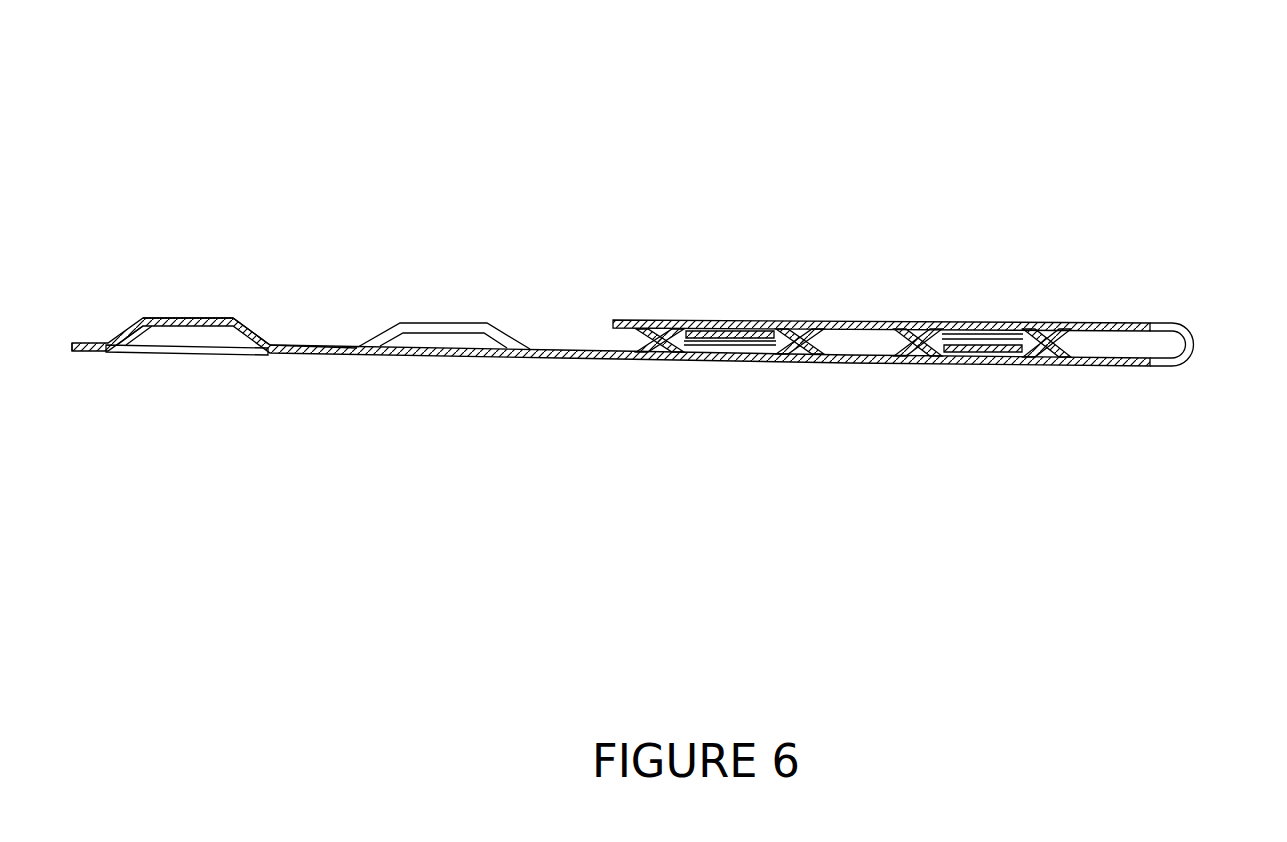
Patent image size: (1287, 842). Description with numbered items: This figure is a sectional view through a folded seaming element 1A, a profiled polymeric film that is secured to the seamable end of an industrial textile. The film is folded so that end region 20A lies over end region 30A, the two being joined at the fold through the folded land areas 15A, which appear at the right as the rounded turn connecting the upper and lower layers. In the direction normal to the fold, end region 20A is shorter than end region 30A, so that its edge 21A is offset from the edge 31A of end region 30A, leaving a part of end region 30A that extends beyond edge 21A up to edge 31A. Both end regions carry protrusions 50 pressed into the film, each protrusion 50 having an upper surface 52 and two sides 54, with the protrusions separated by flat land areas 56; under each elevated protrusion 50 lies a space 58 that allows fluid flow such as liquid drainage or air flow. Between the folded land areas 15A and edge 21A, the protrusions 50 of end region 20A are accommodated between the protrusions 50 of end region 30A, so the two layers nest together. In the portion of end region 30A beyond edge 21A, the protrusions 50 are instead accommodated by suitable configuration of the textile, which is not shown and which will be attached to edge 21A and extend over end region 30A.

The seaming element 1A is at (651, 257).
The folded land areas 15A is at (1194, 350).
The end region 20A is at (858, 298).
The edge 21A is at (613, 321).
The end region 30A is at (375, 375).
The edge 31A is at (70, 348).
The protrusions 50 is at (438, 298).
The upper surface 52 is at (200, 318).
The sides 54 is at (262, 330).
The land areas 56 is at (320, 345).
The spaces 58 is at (180, 336).